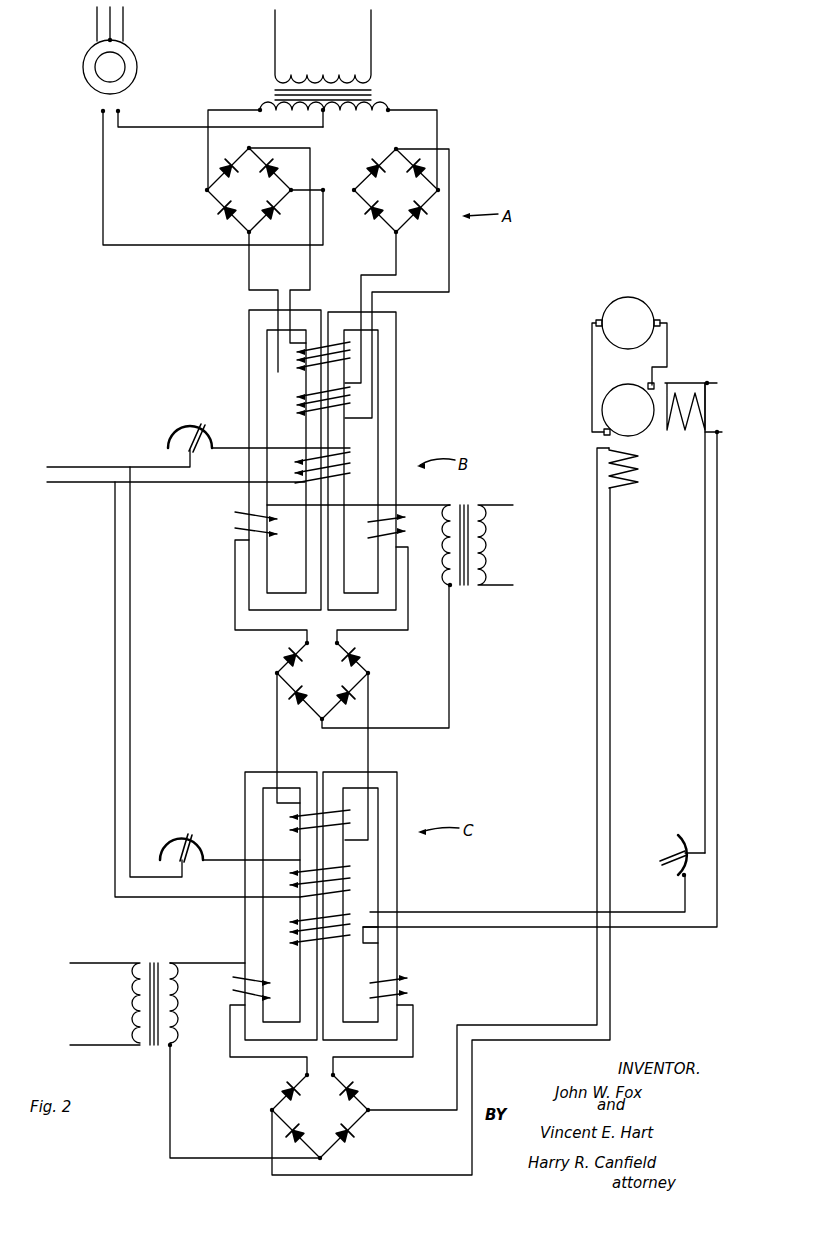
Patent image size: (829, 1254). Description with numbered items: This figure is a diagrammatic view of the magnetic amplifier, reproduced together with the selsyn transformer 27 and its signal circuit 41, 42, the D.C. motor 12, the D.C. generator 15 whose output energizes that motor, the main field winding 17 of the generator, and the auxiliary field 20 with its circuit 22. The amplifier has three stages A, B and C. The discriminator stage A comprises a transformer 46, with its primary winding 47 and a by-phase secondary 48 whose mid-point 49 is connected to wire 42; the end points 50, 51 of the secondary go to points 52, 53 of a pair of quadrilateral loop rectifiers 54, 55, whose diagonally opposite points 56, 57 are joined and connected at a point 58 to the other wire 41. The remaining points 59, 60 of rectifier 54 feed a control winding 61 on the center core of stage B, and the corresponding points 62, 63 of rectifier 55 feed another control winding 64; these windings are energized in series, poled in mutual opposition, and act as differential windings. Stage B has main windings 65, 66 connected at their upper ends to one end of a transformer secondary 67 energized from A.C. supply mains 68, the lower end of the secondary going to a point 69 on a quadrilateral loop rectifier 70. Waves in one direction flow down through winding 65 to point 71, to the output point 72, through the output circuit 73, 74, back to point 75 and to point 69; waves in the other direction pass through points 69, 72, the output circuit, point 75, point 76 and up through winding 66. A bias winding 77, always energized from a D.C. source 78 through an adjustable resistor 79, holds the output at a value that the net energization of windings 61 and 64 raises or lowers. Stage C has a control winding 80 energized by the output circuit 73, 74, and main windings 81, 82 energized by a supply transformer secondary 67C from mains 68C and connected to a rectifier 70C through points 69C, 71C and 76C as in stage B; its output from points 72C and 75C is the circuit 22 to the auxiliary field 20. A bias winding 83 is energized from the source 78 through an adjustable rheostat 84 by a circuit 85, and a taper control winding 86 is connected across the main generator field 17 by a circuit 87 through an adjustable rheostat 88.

The D.C. motor 12 is at (629, 293).
The D.C. generator 15 is at (631, 378).
The main field 17 is at (676, 431).
The auxiliary field 20 is at (622, 487).
The circuit 22 is at (610, 585).
The selsyn transformer 27 is at (83, 66).
The wire of signal circuit 41 is at (100, 108).
The wire of signal circuit 42 is at (121, 110).
The transformer 46 is at (380, 96).
The transformer primary winding 47 is at (375, 80).
The by-phase secondary 48 is at (365, 112).
The mid-point 49 is at (324, 113).
The end point of secondary 50 is at (260, 110).
The end point of secondary 51 is at (390, 110).
The rectifier point 52 is at (205, 190).
The rectifier point 53 is at (441, 190).
The quadrilateral loop rectifier 54 is at (249, 190).
The quadrilateral loop rectifier 55 is at (396, 190).
The diagonally opposite point 56 is at (291, 188).
The diagonally opposite point 57 is at (358, 186).
The connection point 58 is at (324, 192).
The rectifier point 59 is at (248, 148).
The rectifier point 60 is at (248, 232).
The control winding 61 is at (300, 368).
The rectifier point 62 is at (398, 149).
The rectifier point 63 is at (398, 233).
The control winding 64 is at (300, 414).
The main winding 65 is at (273, 530).
The main winding 66 is at (372, 531).
The transformer secondary 67 is at (449, 533).
The A.C. supply mains 68 is at (499, 507).
The rectifier point 69 is at (321, 720).
The quadrilateral loop rectifier 70 is at (322, 681).
The rectifier point 71 is at (305, 643).
The amplifier output point 72 is at (275, 673).
The output circuit 73 is at (276, 743).
The output circuit 74 is at (370, 746).
The rectifier point 75 is at (370, 673).
The rectifier point 76 is at (339, 643).
The bias winding 77 is at (344, 452).
The D.C. source 78 is at (46, 482).
The adjustable resistor 79 is at (203, 437).
The control winding 80 is at (301, 831).
The main winding 81 is at (271, 997).
The main winding 82 is at (374, 996).
The bias winding 83 is at (340, 870).
The adjustable rheostat 84 is at (198, 851).
The circuit 85 is at (116, 789).
The taper control winding 86 is at (296, 940).
The circuit 87 is at (716, 541).
The adjustable rheostat 88 is at (672, 845).
The supply transformer secondary 67C is at (172, 1004).
The A.C. supply mains 68C is at (110, 1044).
The rectifier point 69C is at (322, 1158).
The quadrilateral loop rectifier 70C is at (320, 1116).
The rectifier point 71C is at (305, 1075).
The output point 72C is at (270, 1110).
The output point 75C is at (370, 1110).
The rectifier point 76C is at (335, 1075).